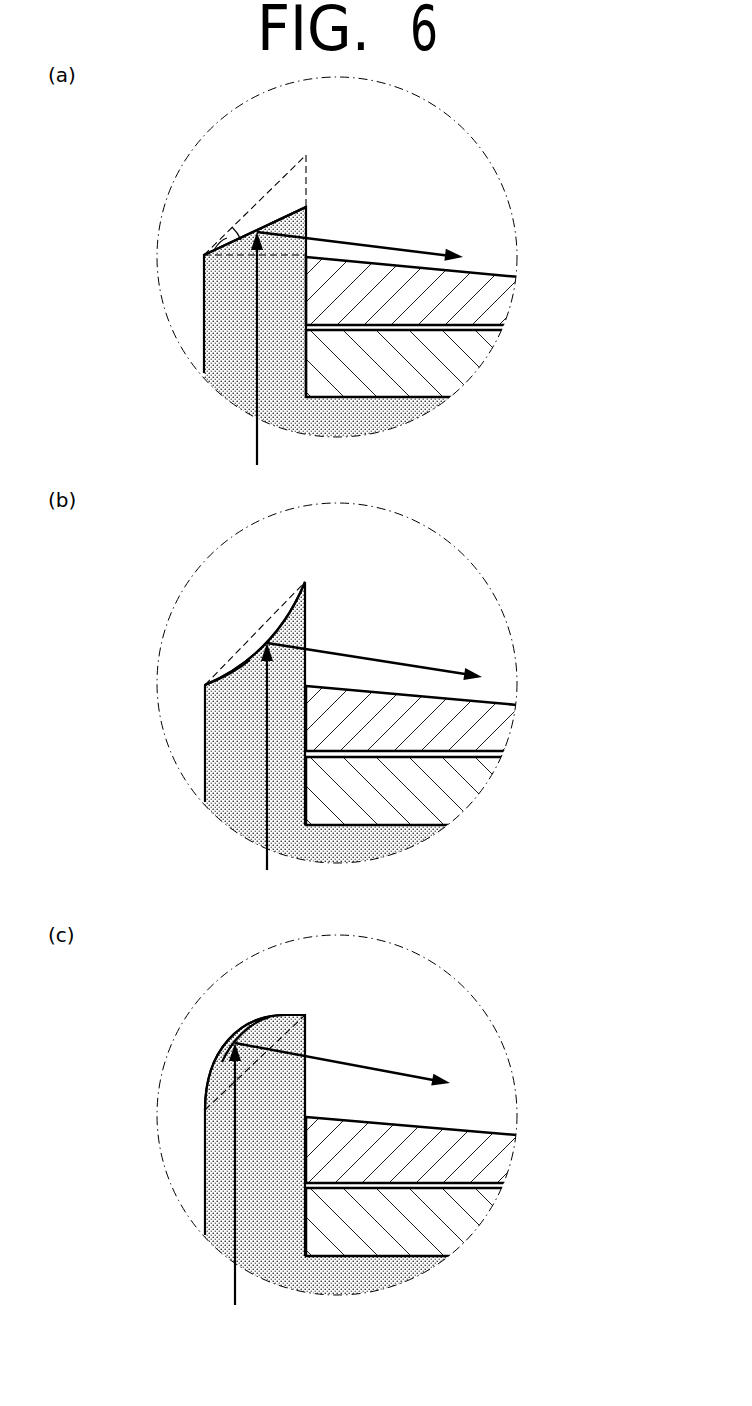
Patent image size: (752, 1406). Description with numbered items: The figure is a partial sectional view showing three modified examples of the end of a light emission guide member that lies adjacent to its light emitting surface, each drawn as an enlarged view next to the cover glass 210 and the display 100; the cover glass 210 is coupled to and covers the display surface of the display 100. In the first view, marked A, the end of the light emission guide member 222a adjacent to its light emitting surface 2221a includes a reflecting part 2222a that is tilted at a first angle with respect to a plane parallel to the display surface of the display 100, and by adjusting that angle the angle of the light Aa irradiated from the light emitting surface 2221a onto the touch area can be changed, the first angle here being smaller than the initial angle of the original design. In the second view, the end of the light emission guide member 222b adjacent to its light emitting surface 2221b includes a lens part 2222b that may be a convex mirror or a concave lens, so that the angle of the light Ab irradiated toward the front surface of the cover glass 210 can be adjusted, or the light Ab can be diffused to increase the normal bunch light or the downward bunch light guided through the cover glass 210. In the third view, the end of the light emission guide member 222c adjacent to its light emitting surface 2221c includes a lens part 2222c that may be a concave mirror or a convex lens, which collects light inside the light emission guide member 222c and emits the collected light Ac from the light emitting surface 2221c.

The display 100 is at (478, 345).
The cover glass 210 is at (470, 302).
The light emission guide member 222a is at (222, 302).
The light emitting surface 2221a is at (306, 220).
The reflecting part 2222a is at (283, 208).
The light Aa is at (413, 250).
The part A of FIG. 6 A is at (256, 376).
The light emission guide member 222b is at (228, 735).
The light emitting surface 2221b is at (306, 618).
The lens part 2222b is at (235, 660).
The light Ab is at (437, 662).
The light emission guide member 222c is at (220, 1162).
The light emitting surface 2221c is at (308, 1033).
The lens part 2222c is at (257, 1028).
The collected light Ac is at (403, 1078).